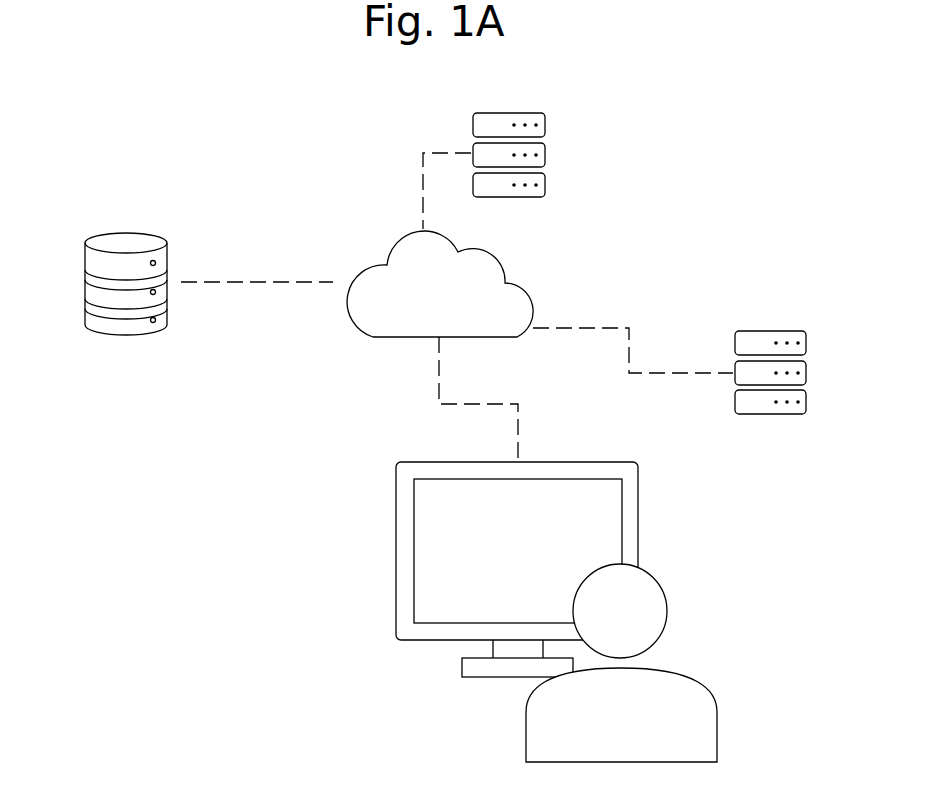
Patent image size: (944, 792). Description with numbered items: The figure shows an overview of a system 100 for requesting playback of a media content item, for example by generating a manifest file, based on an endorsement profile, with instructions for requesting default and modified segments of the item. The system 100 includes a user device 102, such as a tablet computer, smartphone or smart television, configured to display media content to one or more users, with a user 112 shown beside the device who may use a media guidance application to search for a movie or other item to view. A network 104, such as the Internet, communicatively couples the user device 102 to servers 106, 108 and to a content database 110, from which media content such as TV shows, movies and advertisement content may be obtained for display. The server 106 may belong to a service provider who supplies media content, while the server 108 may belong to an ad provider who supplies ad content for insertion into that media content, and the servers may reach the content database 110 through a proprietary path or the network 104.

The system 100 is at (202, 147).
The user device 102 is at (396, 560).
The network 104 is at (386, 265).
The server 106 is at (820, 368).
The server 108 is at (553, 150).
The content database 110 is at (78, 272).
The user 112 is at (717, 722).